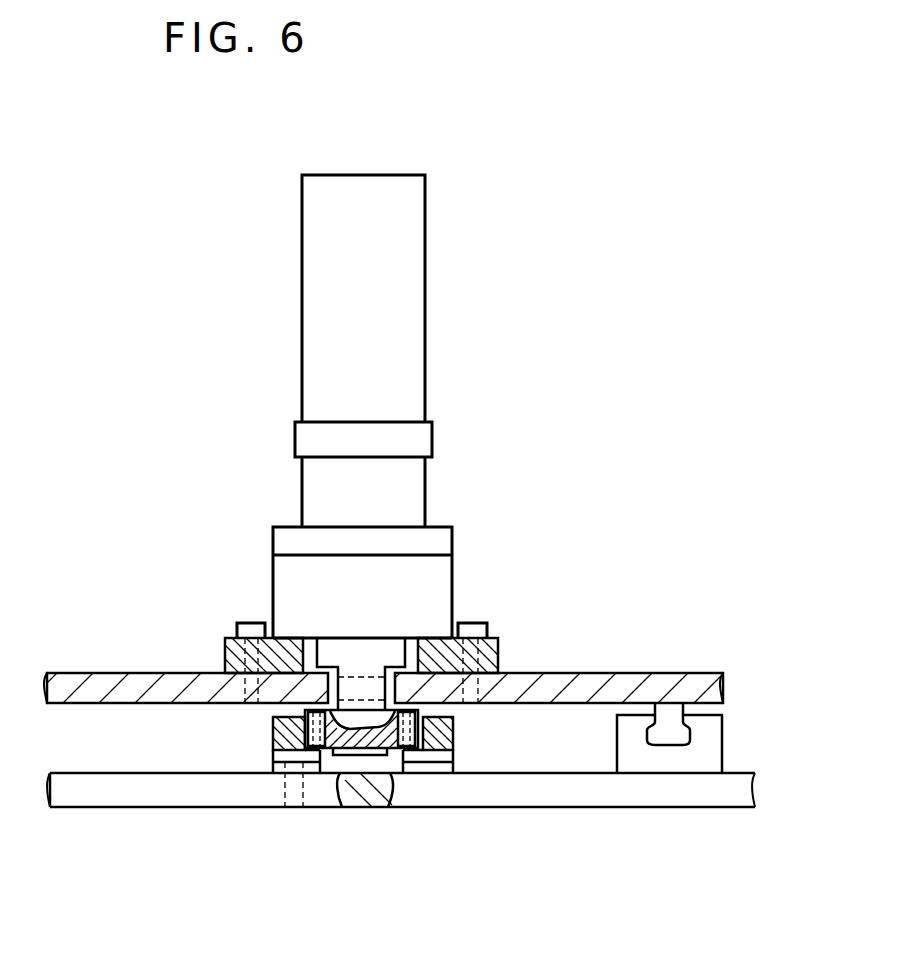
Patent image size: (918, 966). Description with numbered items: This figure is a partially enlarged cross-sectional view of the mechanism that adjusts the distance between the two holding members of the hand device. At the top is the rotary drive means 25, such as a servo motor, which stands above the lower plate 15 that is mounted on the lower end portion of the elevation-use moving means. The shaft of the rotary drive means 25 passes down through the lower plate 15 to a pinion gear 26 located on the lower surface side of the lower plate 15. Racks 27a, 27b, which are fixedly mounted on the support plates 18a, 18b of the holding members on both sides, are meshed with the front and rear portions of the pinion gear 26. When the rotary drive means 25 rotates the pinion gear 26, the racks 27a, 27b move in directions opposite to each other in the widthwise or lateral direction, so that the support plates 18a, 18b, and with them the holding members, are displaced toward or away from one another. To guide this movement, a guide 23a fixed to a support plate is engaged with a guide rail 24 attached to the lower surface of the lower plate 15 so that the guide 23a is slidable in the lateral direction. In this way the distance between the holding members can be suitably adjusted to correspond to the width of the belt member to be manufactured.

The rotary drive means 25 is at (414, 380).
The lower plate 15 is at (592, 686).
The pinion gear 26 is at (350, 733).
The rack 27a is at (273, 733).
The rack 27b is at (455, 737).
The support plate 18a is at (87, 795).
The support plate 18b is at (627, 797).
The guide 23a is at (710, 748).
The guide rail 24 is at (688, 740).